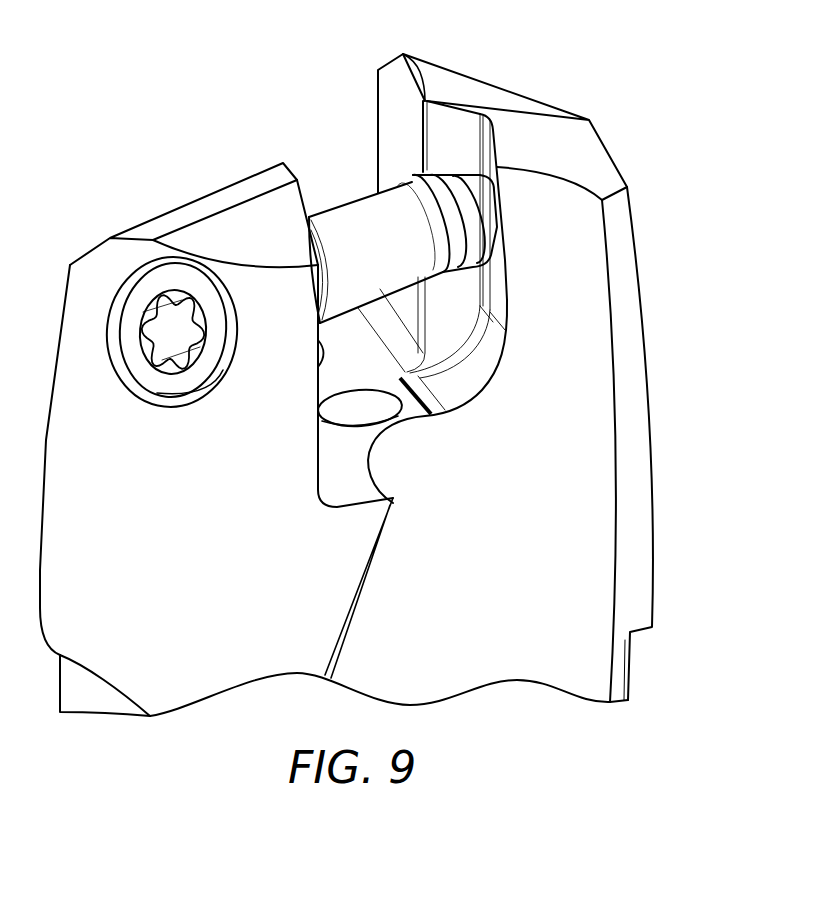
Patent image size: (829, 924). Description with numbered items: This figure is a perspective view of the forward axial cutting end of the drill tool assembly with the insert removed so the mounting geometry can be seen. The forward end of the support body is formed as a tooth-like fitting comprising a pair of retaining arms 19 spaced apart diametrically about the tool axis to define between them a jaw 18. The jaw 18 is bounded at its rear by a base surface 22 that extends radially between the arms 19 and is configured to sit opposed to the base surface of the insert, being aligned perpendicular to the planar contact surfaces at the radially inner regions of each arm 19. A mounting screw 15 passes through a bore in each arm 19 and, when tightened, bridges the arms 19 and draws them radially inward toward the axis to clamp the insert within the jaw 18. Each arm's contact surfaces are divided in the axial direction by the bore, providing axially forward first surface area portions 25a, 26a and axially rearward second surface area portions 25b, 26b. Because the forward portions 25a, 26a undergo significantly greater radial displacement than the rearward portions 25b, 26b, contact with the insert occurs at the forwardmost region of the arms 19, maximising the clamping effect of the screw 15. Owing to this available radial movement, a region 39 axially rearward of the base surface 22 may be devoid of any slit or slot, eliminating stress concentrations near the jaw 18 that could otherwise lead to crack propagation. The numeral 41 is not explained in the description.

The retaining arm 19 is at (188, 208).
The mounting screw 15 is at (346, 190).
The jaw 18 is at (343, 357).
The base surface 22 is at (350, 493).
The axially forward first surface area portion 25a is at (385, 98).
The axially rearward second surface area portion 25b is at (403, 307).
The axially forward first surface area portion 26a is at (458, 123).
The axially rearward second surface area portion 26b is at (460, 297).
The region 39 is at (415, 461).
The chamfer 41 is at (421, 68).